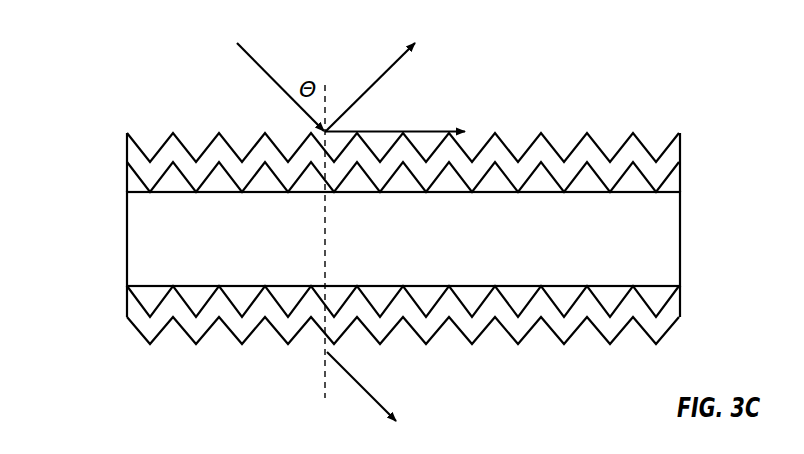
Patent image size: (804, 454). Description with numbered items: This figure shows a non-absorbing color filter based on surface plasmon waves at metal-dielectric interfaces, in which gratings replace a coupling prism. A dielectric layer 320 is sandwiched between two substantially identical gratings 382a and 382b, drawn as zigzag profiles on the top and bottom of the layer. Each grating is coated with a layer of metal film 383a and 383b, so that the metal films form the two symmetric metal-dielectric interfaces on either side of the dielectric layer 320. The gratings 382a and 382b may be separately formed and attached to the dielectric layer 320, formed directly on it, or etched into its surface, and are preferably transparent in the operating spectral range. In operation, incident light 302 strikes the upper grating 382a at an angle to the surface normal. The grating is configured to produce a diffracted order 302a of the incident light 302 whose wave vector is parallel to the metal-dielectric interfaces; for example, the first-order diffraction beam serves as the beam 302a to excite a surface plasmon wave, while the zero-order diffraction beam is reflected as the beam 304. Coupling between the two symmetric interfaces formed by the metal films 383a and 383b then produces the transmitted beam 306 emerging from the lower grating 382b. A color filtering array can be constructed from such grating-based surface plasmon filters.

The incident light 302 is at (246, 87).
The diffracted order 302a is at (421, 113).
The reflected beam 304 is at (364, 77).
The transmitted beam 306 is at (344, 398).
The dielectric layer 320 is at (594, 252).
The grating 382a is at (451, 144).
The grating 382b is at (452, 336).
The metal film 383a is at (354, 158).
The metal film 383b is at (355, 307).